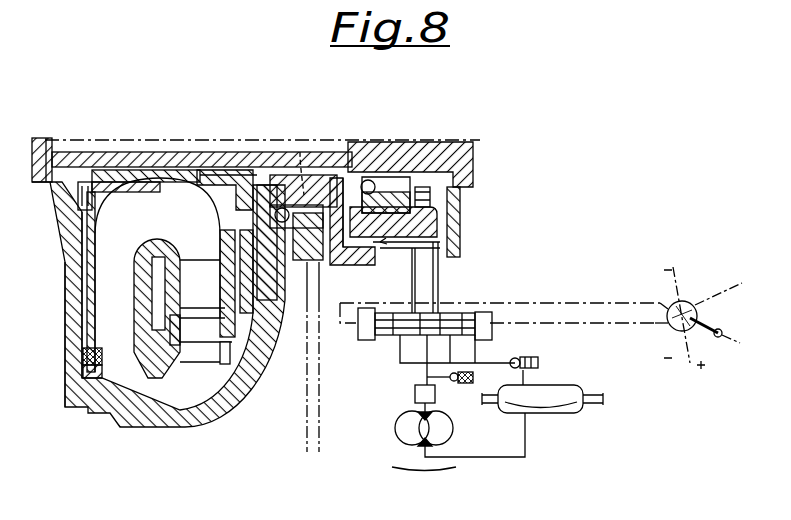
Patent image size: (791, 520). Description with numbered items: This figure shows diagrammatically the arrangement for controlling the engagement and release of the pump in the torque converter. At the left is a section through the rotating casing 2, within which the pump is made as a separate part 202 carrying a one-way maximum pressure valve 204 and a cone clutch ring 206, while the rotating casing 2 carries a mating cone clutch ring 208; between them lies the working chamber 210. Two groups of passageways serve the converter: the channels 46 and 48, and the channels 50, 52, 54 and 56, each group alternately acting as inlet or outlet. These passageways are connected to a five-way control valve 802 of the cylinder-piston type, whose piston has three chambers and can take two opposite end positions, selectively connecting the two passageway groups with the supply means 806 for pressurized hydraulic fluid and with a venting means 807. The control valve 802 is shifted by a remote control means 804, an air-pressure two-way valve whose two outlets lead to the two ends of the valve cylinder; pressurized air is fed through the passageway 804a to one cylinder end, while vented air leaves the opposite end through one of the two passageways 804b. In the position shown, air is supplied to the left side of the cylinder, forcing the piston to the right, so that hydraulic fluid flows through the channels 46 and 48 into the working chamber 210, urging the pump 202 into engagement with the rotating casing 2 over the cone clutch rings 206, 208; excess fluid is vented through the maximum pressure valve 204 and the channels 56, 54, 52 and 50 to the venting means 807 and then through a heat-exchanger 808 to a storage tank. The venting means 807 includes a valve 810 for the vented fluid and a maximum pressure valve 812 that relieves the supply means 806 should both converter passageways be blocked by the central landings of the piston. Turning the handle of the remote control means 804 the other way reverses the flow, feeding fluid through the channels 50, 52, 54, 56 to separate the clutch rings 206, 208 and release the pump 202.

The rotating casing 2 is at (220, 400).
The channel 46 is at (301, 152).
The channel 48 is at (200, 190).
The channel 50 is at (338, 258).
The channel 52 is at (350, 152).
The channel 54 is at (180, 147).
The channel 56 is at (82, 157).
The pump part 202 is at (105, 308).
The one-way maximum pressure valve 204 is at (78, 192).
The cone clutch ring 206 is at (84, 355).
The cone clutch ring 208 is at (84, 372).
The working chamber 210 is at (148, 234).
The control valve 802 is at (463, 285).
The remote control means 804 is at (695, 282).
The passageway 804a is at (672, 302).
The passageway 804b is at (672, 325).
The supply means 806 is at (386, 448).
The venting means 807 is at (490, 362).
The heat-exchanger 808 is at (570, 395).
The valve 810 is at (540, 358).
The maximum pressure valve 812 is at (470, 385).